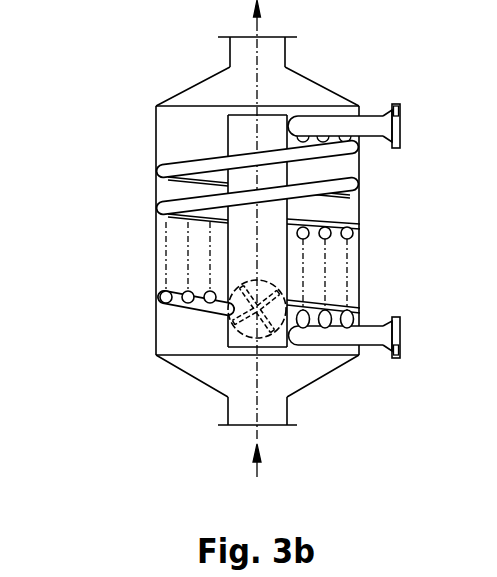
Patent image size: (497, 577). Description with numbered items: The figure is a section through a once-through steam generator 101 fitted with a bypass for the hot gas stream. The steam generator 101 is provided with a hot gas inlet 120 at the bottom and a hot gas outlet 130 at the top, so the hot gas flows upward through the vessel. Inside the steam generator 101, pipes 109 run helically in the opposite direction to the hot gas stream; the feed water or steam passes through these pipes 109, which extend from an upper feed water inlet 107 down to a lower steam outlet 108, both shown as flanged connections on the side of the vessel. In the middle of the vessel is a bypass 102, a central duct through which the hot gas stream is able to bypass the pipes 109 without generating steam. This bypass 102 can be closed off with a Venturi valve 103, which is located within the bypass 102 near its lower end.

The steam generator 101 is at (430, 240).
The bypass 102 is at (243, 138).
The Venturi valve 103 is at (248, 328).
The feed water inlet 107 is at (395, 106).
The steam outlet 108 is at (395, 358).
The pipes 109 is at (196, 237).
The hot gas inlet 120 is at (242, 413).
The hot gas outlet 130 is at (243, 53).